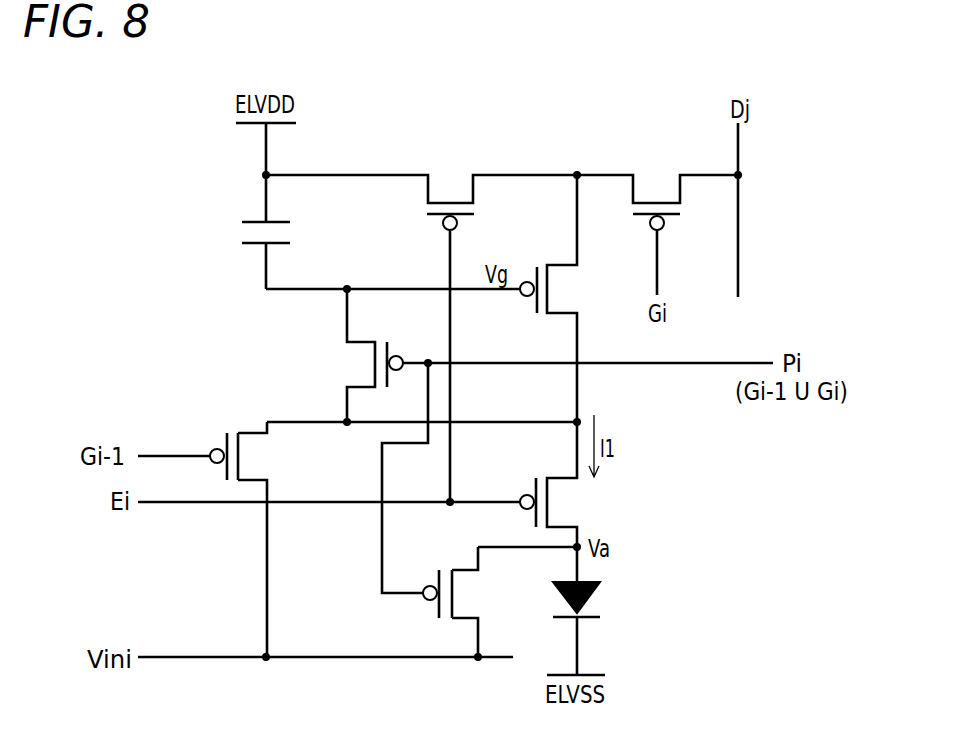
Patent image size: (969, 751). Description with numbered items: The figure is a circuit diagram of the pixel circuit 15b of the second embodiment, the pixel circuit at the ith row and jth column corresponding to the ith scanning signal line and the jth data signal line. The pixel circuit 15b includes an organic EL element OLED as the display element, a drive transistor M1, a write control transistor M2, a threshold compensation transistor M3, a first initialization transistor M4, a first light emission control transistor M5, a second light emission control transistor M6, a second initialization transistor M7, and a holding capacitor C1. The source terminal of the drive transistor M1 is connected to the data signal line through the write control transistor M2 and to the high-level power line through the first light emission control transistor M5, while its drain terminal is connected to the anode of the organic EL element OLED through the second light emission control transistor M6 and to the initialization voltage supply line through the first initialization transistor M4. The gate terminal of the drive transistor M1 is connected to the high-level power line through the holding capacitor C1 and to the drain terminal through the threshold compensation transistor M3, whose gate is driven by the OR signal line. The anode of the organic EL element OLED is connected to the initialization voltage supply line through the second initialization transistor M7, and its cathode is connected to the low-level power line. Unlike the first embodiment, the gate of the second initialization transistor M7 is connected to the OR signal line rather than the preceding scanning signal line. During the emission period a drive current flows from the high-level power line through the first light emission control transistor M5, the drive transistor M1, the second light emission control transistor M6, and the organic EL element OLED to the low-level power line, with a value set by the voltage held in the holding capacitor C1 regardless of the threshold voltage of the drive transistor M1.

The pixel circuit 15b is at (635, 83).
The holding capacitor C1 is at (243, 233).
The drive transistor M1 is at (545, 263).
The write control transistor M2 is at (683, 207).
The threshold compensation transistor M3 is at (378, 340).
The first initialization transistor M4 is at (233, 432).
The first light emission control transistor M5 is at (427, 211).
The second light emission control transistor M6 is at (545, 476).
The second initialization transistor M7 is at (447, 568).
The organic EL element OLED is at (601, 597).